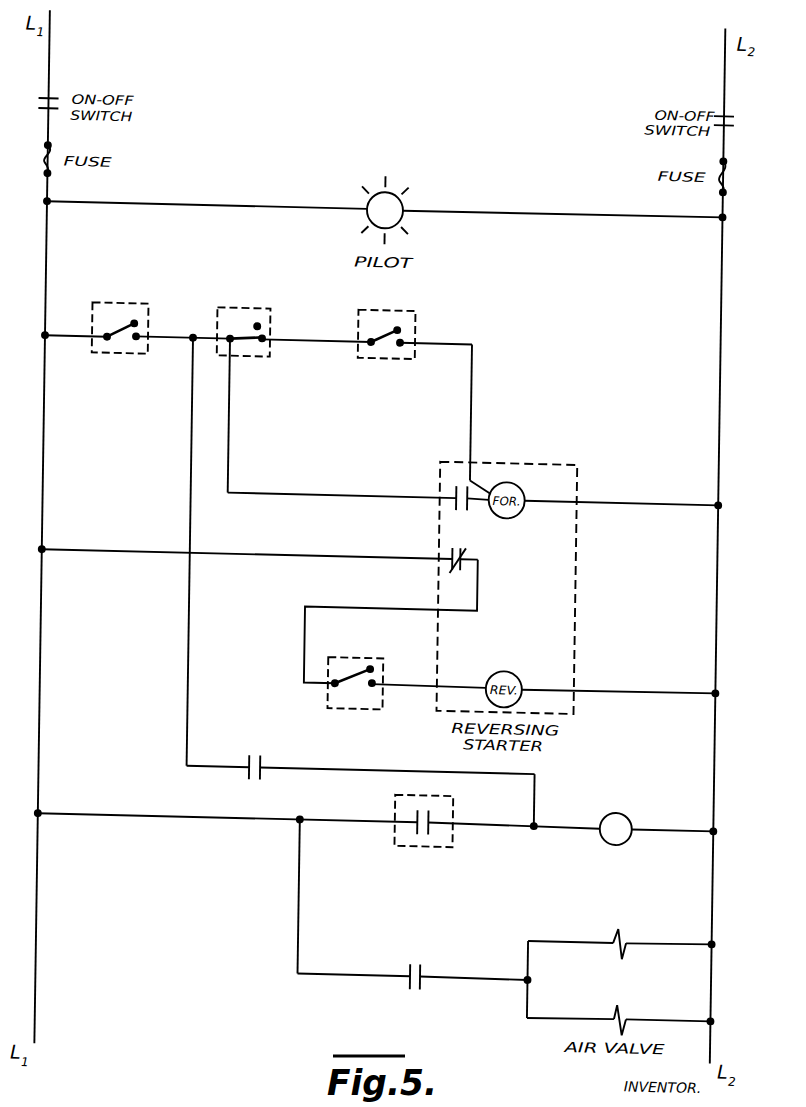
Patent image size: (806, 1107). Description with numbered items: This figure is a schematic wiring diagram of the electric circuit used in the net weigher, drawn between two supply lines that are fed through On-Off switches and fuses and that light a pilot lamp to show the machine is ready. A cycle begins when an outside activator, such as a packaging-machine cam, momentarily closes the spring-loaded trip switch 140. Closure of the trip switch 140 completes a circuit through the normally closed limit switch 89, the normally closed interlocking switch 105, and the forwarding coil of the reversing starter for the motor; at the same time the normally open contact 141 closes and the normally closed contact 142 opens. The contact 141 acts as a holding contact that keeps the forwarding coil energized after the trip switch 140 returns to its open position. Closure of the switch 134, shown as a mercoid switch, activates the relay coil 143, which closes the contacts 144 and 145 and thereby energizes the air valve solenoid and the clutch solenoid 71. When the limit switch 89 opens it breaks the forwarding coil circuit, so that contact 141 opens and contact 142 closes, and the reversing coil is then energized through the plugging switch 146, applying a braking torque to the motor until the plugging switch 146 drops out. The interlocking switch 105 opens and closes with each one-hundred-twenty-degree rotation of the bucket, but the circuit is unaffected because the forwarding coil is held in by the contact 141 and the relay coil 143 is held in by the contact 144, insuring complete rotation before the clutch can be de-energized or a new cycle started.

The limit switch 89 is at (112, 299).
The interlocking switch 105 is at (245, 350).
The trip switch 140 is at (420, 320).
The contact 141 is at (469, 476).
The contact 142 is at (463, 539).
The relay coil 143 is at (640, 800).
The contact 144 is at (266, 746).
The contact 145 is at (434, 952).
The plugging switch 146 is at (365, 646).
The switch 134 is at (405, 820).
The clutch solenoid 71 is at (634, 940).